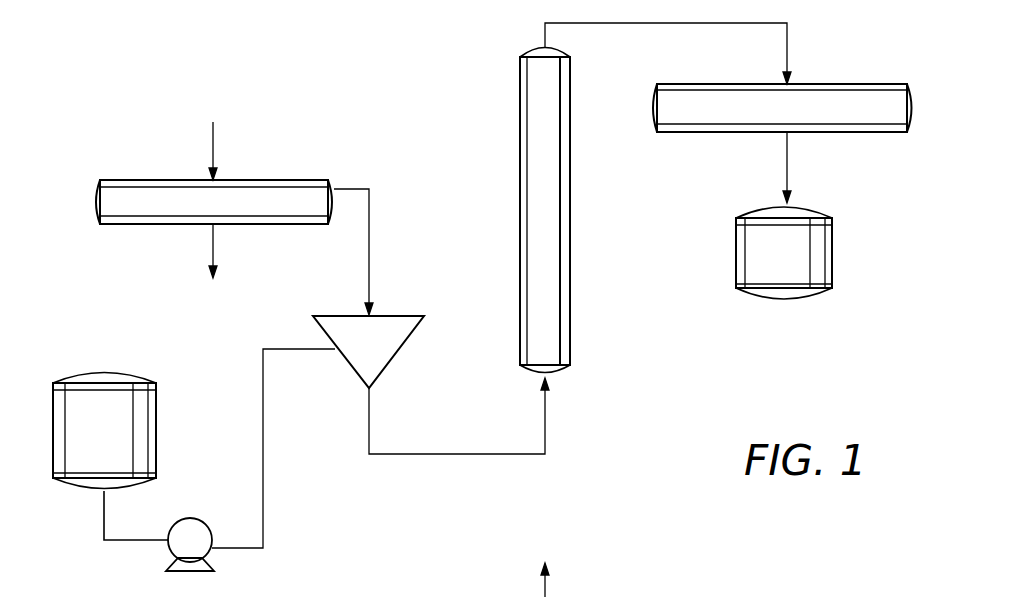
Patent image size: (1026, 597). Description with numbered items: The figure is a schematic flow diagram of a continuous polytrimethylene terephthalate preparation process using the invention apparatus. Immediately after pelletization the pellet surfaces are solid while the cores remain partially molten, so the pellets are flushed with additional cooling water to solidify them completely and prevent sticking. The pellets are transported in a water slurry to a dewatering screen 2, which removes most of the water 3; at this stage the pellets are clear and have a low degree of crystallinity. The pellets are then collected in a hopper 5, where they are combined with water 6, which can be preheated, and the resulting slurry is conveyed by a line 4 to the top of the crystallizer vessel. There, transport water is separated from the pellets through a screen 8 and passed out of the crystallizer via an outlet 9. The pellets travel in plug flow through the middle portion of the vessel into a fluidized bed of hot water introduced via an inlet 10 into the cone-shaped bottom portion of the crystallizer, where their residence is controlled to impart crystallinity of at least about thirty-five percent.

The dewatering screen 2 is at (288, 194).
The water 3 is at (268, 226).
The transfer line 4 is at (372, 233).
The hopper 5 is at (405, 350).
The water 6 is at (296, 350).
The screen 8 is at (572, 270).
The crystallizer water outlet 9 is at (868, 82).
The hot water inlet 10 is at (835, 258).